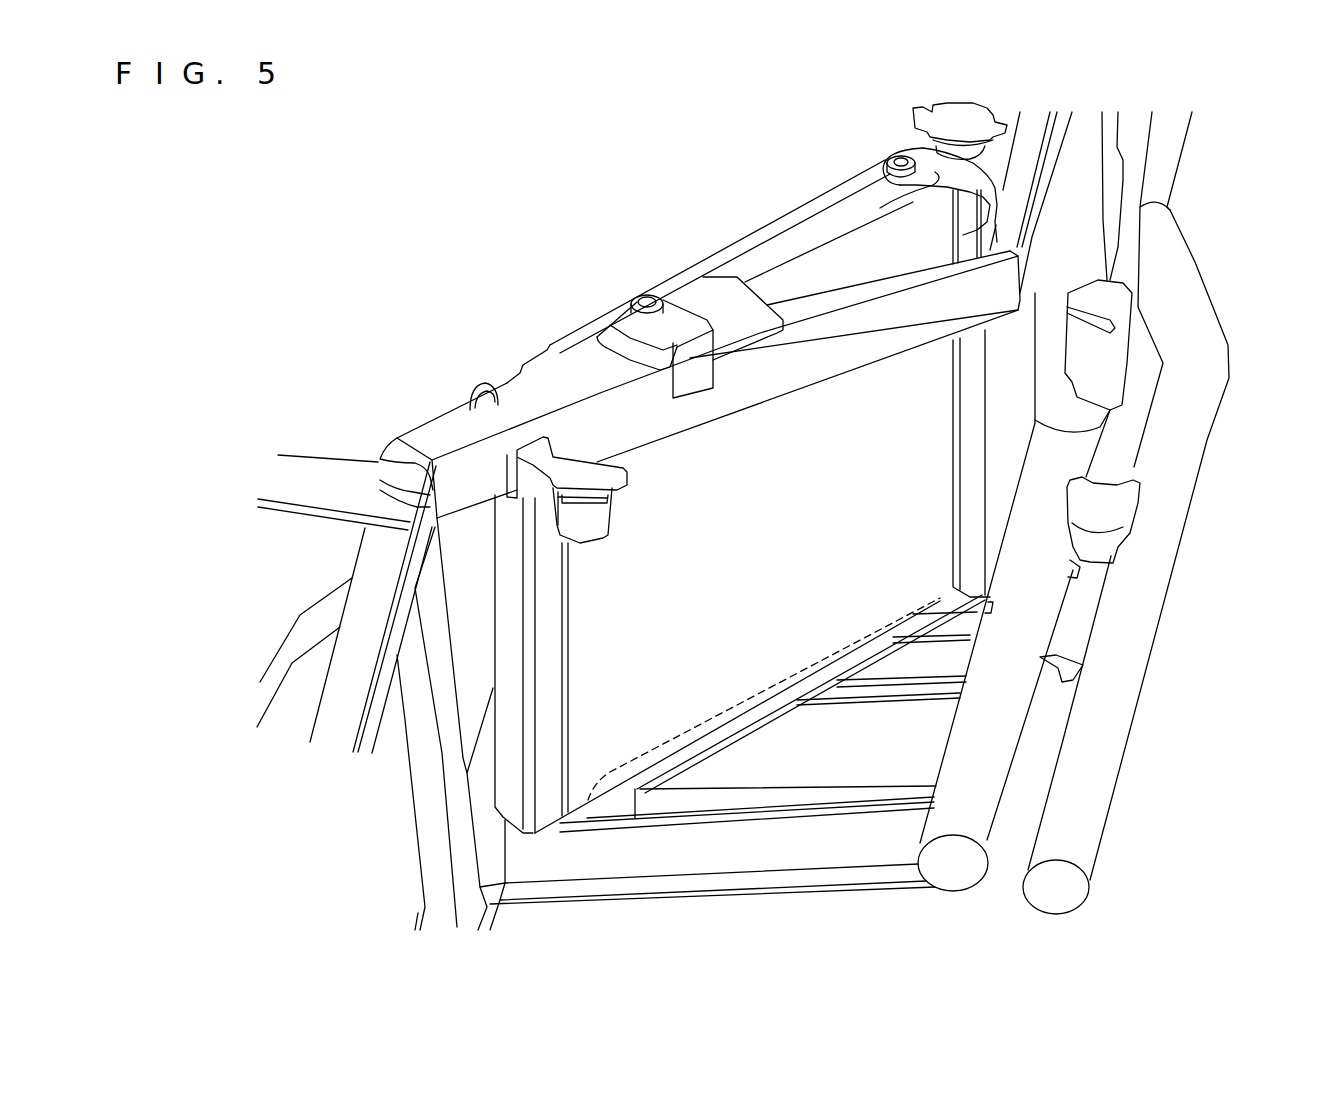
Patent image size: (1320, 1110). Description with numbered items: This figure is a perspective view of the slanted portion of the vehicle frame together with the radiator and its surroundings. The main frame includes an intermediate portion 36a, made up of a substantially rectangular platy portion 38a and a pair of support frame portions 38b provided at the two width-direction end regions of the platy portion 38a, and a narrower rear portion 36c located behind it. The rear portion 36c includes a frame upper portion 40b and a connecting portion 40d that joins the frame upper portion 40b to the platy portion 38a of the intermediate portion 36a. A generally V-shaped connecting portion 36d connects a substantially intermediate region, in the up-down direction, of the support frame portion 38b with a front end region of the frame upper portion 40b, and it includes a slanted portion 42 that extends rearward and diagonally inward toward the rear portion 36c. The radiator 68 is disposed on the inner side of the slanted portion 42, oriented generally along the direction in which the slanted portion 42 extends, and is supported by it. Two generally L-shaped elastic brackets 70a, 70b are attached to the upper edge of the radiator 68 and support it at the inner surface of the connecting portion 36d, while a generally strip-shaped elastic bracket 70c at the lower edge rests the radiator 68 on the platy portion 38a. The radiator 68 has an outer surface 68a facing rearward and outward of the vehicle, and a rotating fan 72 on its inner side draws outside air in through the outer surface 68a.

The intermediate portion 36a is at (965, 902).
The rear portion 36c is at (257, 650).
The connecting portion 36d is at (861, 272).
The platy portion 38a is at (738, 862).
The support frame portion 38b is at (985, 753).
The frame upper portion 40b is at (378, 555).
The connecting portion 40d is at (430, 820).
The slanted portion 42 is at (822, 305).
The radiator 68 is at (887, 553).
The outer surface 68a is at (895, 503).
The elastic bracket 70a is at (673, 347).
The elastic bracket 70b is at (917, 195).
The elastic bracket 70c is at (740, 725).
The rotating fan 72 is at (663, 273).